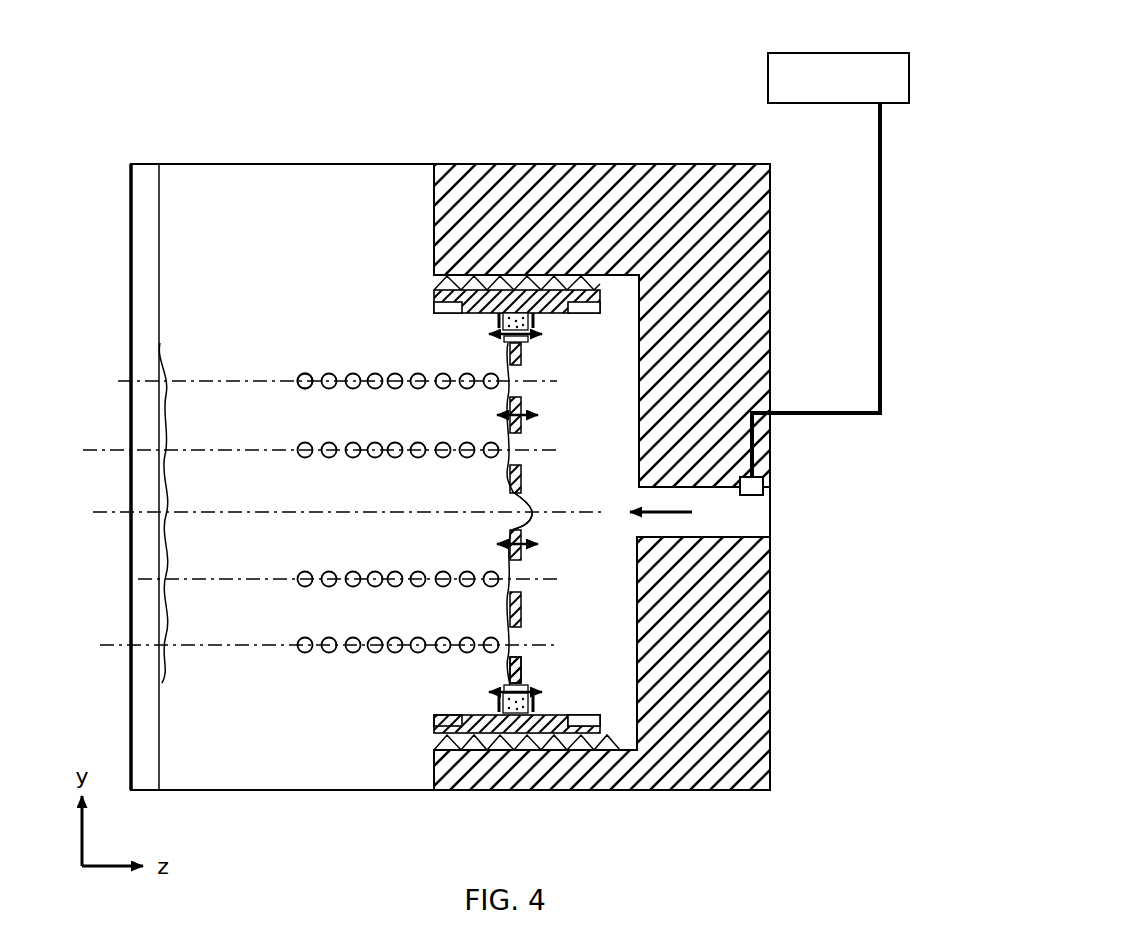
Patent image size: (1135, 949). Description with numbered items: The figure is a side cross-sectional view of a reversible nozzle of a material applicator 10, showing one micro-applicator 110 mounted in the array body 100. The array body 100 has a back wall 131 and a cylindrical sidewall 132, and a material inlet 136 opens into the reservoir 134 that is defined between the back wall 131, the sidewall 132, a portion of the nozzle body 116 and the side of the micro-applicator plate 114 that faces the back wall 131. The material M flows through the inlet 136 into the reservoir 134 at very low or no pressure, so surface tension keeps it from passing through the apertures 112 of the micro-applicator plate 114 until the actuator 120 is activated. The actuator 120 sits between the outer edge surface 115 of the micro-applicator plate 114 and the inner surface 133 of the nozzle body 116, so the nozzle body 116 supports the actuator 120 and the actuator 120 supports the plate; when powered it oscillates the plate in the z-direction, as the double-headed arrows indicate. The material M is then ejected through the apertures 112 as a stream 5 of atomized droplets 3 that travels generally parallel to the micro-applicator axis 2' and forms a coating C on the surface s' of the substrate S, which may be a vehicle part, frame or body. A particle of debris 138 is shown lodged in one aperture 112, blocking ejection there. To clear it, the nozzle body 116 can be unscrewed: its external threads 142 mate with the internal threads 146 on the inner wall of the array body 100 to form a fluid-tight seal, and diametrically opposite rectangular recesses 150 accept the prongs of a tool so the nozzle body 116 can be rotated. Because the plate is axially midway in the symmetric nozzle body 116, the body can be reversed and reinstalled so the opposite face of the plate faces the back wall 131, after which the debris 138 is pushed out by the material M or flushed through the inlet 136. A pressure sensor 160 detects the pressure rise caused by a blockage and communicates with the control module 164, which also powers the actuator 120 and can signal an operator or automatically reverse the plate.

The material applicator 10 is at (390, 180).
The array body 100 is at (548, 168).
The external threads 142 is at (437, 278).
The rectangular recesses 150 is at (440, 308).
The micro-applicator plate 114 is at (506, 352).
The apertures 112 is at (513, 381).
The debris 138 is at (530, 504).
The outer edge surface 115 is at (517, 684).
The actuator 120 is at (503, 685).
The micro-applicator 110 is at (408, 720).
The nozzle body 116 is at (434, 736).
The sidewall 132 is at (600, 278).
The reservoir 134 is at (605, 406).
The back wall 131 is at (638, 663).
The inner surface 133 is at (568, 714).
The internal threads 146 is at (643, 747).
The material inlet 136 is at (762, 528).
The pressure sensor 160 is at (758, 495).
The control module 164 is at (768, 67).
The stream 5 is at (332, 358).
The atomized droplets 3 is at (302, 375).
The substrate S is at (117, 346).
The coating C is at (163, 368).
The surface s' is at (121, 477).
The micro-applicator axis 2' is at (349, 489).
The material M is at (673, 512).